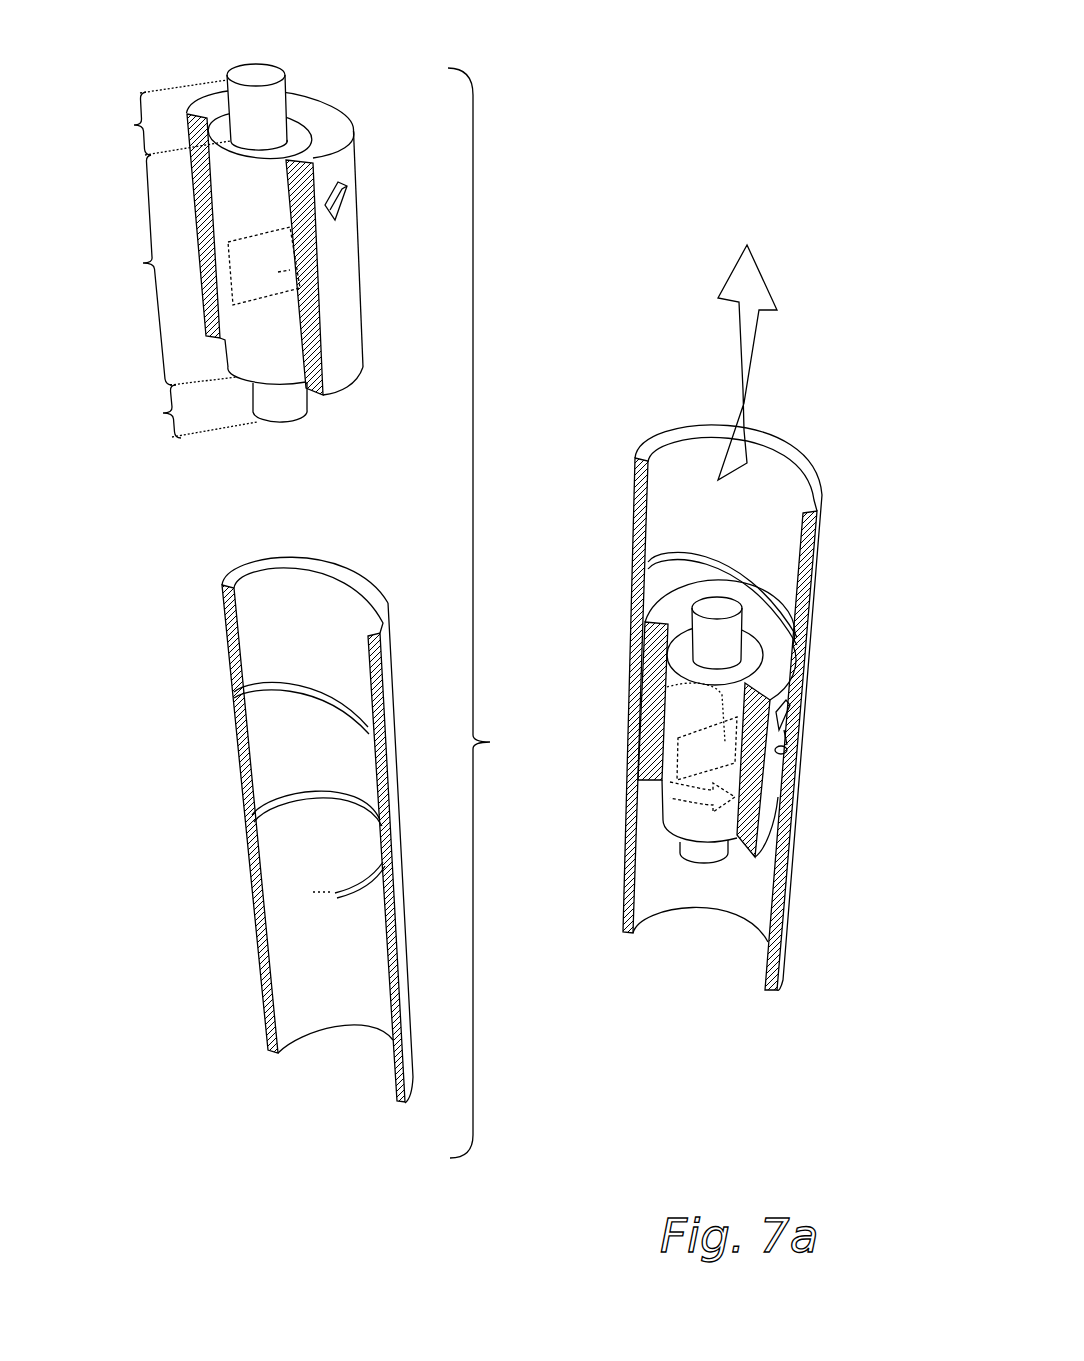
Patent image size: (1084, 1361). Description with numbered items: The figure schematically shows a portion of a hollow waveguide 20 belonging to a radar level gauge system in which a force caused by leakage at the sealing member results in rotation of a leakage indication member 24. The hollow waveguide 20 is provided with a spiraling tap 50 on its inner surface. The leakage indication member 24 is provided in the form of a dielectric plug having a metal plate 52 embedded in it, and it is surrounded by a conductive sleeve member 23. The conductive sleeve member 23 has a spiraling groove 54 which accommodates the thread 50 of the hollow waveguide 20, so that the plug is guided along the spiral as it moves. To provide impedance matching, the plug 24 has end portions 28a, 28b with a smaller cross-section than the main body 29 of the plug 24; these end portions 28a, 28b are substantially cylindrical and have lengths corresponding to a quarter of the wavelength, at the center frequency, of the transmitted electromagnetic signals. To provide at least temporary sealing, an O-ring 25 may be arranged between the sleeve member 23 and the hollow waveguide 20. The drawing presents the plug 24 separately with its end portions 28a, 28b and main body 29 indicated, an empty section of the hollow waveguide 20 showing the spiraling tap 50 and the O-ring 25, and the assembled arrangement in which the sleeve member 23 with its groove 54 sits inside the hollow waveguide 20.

The hollow waveguide 20 is at (258, 943).
The conductive sleeve member 23 is at (348, 265).
The leakage indication member 24 is at (390, 84).
The O-ring 25 is at (302, 790).
The end portion 28a is at (151, 117).
The end portion 28b is at (180, 411).
The main body 29 is at (168, 270).
The spiraling tap 50 is at (343, 203).
The metal plate 52 is at (313, 273).
The spiraling groove 54 is at (233, 692).